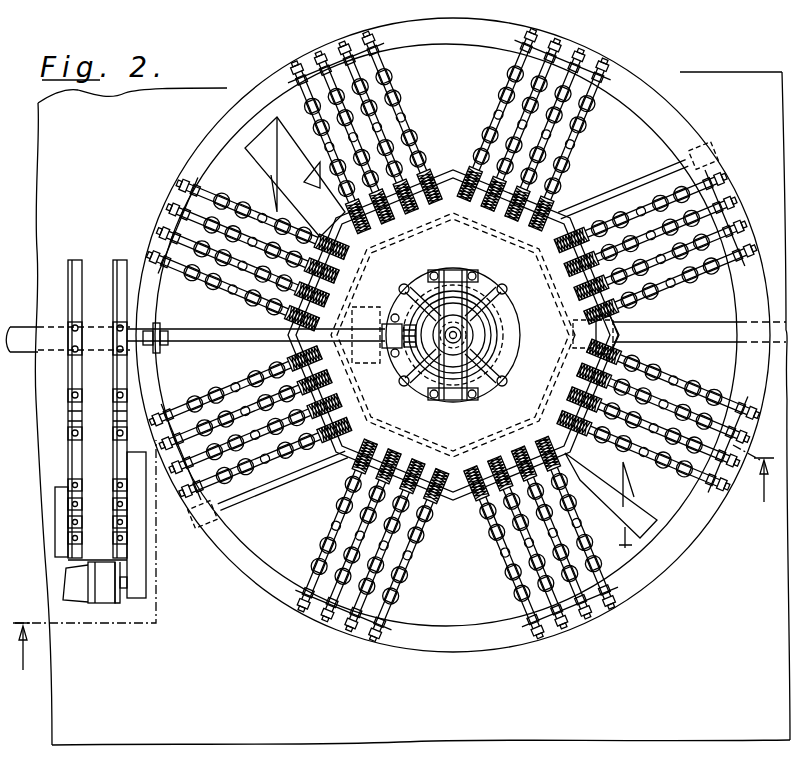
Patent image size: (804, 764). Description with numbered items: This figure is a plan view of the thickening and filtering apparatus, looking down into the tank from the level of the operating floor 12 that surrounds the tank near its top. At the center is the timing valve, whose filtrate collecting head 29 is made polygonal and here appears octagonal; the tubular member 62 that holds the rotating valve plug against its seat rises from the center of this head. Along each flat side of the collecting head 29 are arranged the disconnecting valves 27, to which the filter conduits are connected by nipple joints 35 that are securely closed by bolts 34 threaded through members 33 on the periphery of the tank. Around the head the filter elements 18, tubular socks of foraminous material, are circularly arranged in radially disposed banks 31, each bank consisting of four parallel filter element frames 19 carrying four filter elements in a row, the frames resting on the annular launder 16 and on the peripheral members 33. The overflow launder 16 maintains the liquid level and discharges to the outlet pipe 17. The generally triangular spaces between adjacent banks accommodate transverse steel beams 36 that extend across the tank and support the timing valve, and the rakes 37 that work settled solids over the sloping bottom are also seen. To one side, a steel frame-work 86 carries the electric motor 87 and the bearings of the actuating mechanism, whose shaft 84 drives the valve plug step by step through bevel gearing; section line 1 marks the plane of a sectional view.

The section line 1 is at (396, 557).
The operating floor 12 is at (46, 207).
The annular launder 16 is at (408, 236).
The outlet pipe 17 is at (697, 338).
The filter elements 18 is at (586, 132).
The filter element frames 19 is at (543, 614).
The disconnecting valves 27 is at (447, 458).
The filtrate collecting head 29 is at (452, 170).
The banks 31 is at (518, 550).
The members 33 is at (386, 44).
The bolts 34 is at (345, 54).
The nipple joints 35 is at (350, 458).
The transverse steel beams 36 is at (648, 181).
The rakes 37 is at (318, 172).
The tubular member 62 is at (457, 336).
The shaft 84 is at (271, 327).
The steel frame-work 86 is at (118, 262).
The electric motor 87 is at (103, 600).